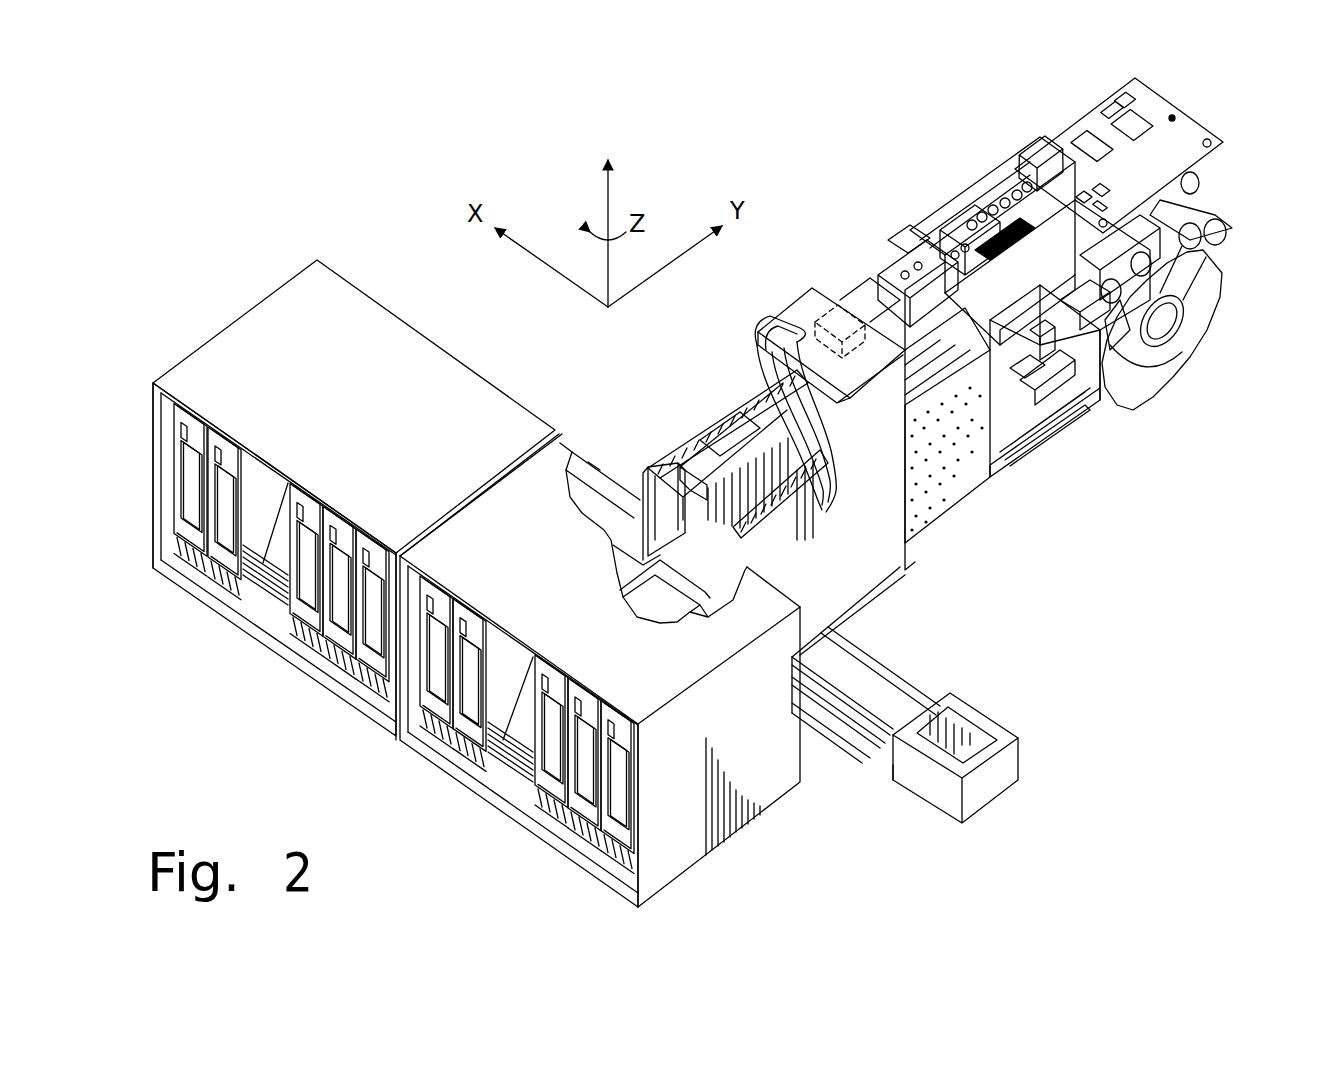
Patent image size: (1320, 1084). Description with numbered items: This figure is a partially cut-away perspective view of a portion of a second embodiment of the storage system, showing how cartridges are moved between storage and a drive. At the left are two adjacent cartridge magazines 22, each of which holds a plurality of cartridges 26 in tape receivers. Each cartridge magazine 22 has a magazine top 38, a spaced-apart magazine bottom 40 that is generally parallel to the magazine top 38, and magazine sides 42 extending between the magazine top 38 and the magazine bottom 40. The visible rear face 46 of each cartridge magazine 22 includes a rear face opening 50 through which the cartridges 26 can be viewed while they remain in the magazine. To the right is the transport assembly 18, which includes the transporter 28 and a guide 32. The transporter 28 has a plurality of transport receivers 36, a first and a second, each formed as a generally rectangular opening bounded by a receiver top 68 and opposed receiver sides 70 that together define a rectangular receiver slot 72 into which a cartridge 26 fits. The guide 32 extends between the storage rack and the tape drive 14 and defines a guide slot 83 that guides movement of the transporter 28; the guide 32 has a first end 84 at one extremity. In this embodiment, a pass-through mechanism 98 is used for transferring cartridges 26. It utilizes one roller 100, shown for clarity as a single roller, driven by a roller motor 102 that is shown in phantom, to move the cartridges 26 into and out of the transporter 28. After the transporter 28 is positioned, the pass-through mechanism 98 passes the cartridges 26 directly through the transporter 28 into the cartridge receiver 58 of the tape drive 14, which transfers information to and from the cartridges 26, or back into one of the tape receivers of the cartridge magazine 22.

The tape drive 14 is at (1030, 150).
The transport assembly 18 is at (912, 612).
The cartridge magazine 22 is at (283, 315).
The cartridge 26 is at (297, 632).
The transporter 28 is at (865, 596).
The guide 32 is at (590, 463).
The transport receivers 36 is at (652, 474).
The magazine top 38 is at (395, 343).
The magazine bottom 40 is at (212, 610).
The magazine side 42 is at (667, 852).
The rear face 46 is at (428, 737).
The rear face opening 50 is at (517, 767).
The cartridge receiver 58 is at (975, 465).
The receiver top 68 is at (798, 306).
The receiver sides 70 is at (893, 560).
The receiver slot 72 is at (798, 490).
The guide slot 83 is at (888, 720).
The first end 84 is at (978, 800).
The pass-through mechanism 98 is at (748, 388).
The roller 100 is at (760, 358).
The roller motor 102 is at (848, 292).